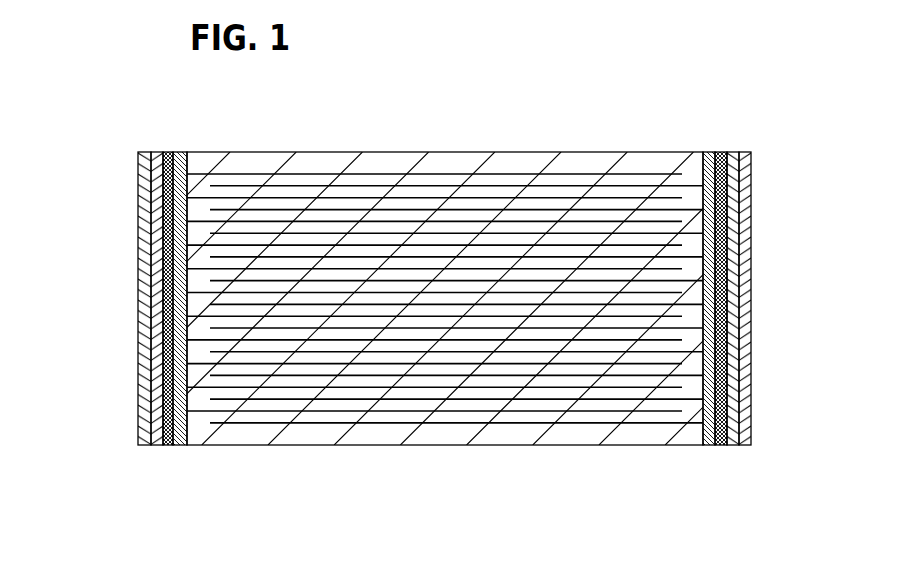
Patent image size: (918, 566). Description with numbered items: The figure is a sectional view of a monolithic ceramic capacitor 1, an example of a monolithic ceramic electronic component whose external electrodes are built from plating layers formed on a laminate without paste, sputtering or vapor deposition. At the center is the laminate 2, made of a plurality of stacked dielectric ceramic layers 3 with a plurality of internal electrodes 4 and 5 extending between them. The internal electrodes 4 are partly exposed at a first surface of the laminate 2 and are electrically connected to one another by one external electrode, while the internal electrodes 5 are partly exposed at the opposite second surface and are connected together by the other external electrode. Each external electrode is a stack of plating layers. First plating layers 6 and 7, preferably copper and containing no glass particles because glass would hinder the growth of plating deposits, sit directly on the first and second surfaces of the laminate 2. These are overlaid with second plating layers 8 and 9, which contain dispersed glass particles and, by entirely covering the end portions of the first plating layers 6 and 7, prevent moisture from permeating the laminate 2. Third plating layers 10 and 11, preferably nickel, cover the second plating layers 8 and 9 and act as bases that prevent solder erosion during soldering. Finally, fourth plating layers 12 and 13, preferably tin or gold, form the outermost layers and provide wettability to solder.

The monolithic ceramic capacitor 1 is at (423, 153).
The laminate 2 is at (445, 252).
The dielectric ceramic layers 3 is at (652, 165).
The internal electrodes 4 is at (434, 358).
The internal electrodes 5 is at (456, 370).
The first plating layer 6 is at (122, 298).
The first plating layer 7 is at (767, 298).
The second plating layer 8 is at (109, 298).
The second plating layer 9 is at (779, 298).
The third plating layer 10 is at (91, 298).
The third plating layer 11 is at (803, 298).
The fourth plating layer 12 is at (86, 298).
The fourth plating layer 13 is at (808, 298).